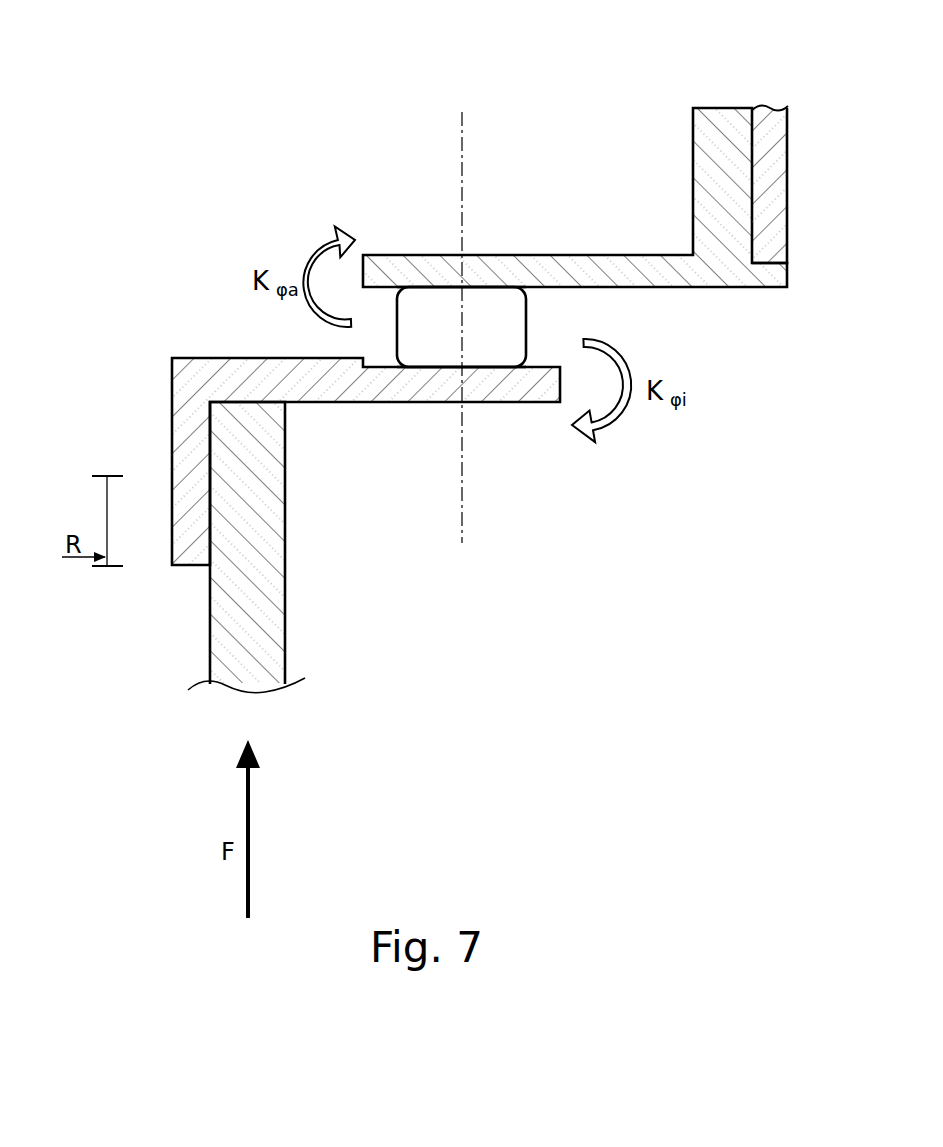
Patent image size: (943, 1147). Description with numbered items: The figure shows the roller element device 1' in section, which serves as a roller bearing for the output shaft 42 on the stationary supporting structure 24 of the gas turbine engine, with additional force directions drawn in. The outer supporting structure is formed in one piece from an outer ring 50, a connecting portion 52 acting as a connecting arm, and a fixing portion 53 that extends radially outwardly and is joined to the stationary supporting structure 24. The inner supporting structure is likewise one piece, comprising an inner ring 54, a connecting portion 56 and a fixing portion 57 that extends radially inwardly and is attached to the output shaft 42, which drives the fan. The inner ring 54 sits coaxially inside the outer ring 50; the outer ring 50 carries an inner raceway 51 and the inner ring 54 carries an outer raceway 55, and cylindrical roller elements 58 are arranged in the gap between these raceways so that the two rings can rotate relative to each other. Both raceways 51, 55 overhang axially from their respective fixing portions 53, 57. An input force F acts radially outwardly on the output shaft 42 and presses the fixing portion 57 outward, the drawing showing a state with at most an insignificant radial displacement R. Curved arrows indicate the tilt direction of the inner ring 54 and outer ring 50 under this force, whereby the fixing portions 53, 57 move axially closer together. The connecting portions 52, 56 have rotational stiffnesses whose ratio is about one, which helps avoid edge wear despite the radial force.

The roller element device 1' is at (304, 318).
The stationary supporting structure 24 is at (772, 120).
The output shaft 42 is at (288, 612).
The outer ring 50 is at (418, 262).
The inner raceway 51 is at (532, 293).
The connecting portion 52 is at (616, 262).
The fixing portion 53 is at (708, 118).
The inner ring 54 is at (522, 385).
The outer raceway 55 is at (530, 359).
The connecting portion 56 is at (330, 385).
The fixing portion 57 is at (178, 431).
The roller elements 58 is at (443, 360).